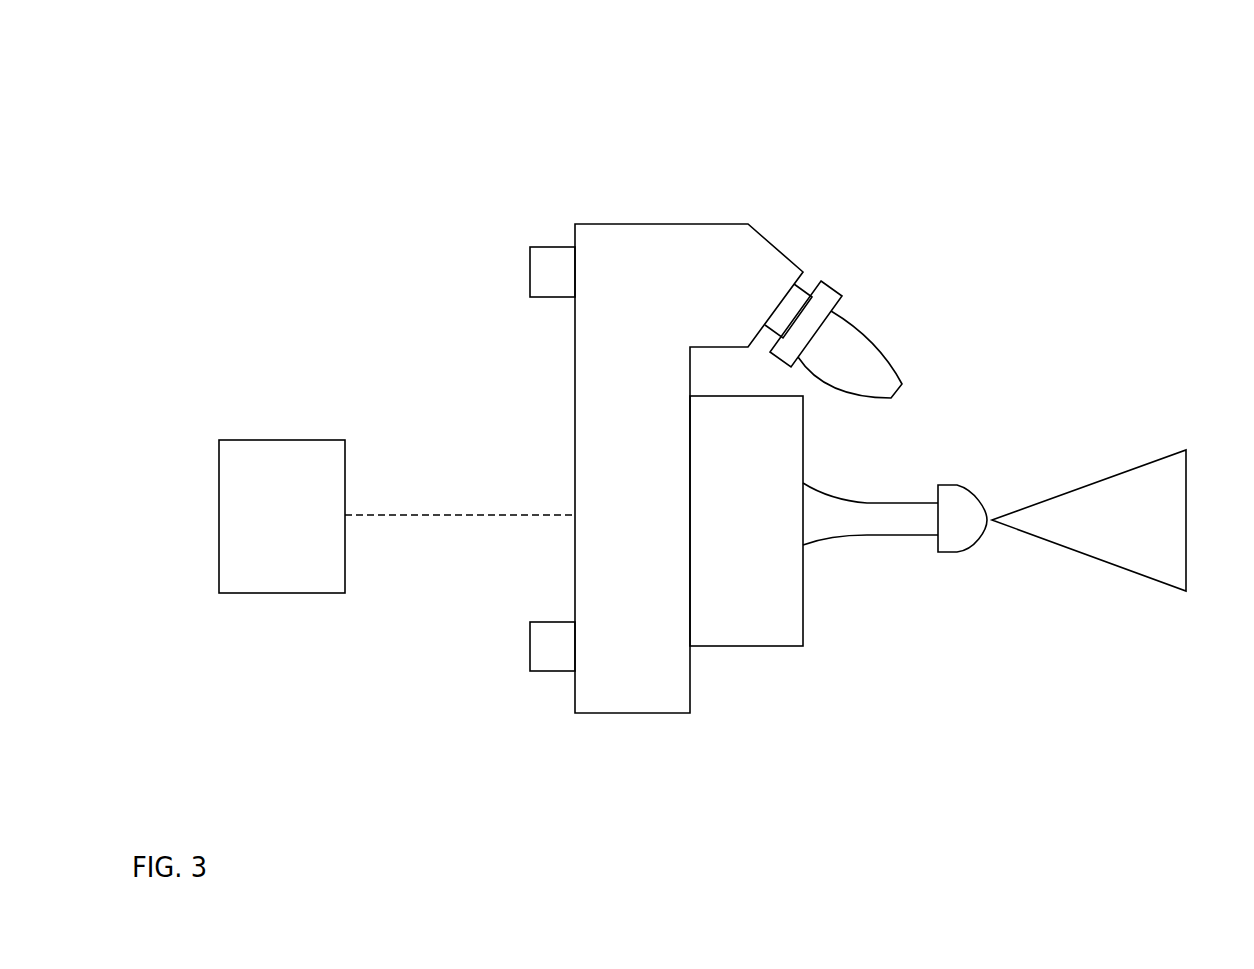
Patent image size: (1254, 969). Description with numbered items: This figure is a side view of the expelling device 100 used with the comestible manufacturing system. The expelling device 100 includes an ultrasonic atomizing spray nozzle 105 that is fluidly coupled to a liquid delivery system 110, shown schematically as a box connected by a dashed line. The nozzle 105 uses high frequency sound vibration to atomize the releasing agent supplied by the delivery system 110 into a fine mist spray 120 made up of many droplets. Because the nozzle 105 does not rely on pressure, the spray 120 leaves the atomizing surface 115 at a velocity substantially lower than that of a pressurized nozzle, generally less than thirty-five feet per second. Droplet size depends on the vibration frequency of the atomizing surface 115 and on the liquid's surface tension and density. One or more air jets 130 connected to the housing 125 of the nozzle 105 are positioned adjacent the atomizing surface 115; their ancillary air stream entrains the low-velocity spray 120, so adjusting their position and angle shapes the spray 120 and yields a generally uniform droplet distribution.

The expelling device 100 is at (322, 112).
The ultrasonic atomizing spray nozzle 105 is at (850, 662).
The liquid delivery system 110 is at (397, 516).
The atomizing surface 115 is at (973, 503).
The spray 120 is at (1130, 503).
The housing 125 is at (588, 401).
The air jet 130 is at (837, 330).